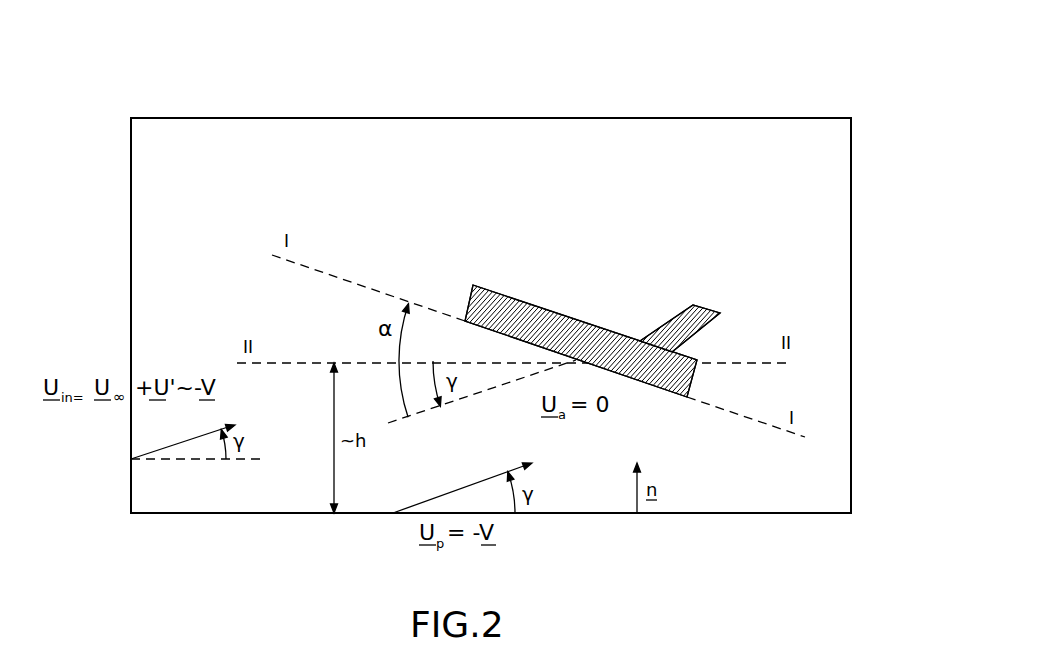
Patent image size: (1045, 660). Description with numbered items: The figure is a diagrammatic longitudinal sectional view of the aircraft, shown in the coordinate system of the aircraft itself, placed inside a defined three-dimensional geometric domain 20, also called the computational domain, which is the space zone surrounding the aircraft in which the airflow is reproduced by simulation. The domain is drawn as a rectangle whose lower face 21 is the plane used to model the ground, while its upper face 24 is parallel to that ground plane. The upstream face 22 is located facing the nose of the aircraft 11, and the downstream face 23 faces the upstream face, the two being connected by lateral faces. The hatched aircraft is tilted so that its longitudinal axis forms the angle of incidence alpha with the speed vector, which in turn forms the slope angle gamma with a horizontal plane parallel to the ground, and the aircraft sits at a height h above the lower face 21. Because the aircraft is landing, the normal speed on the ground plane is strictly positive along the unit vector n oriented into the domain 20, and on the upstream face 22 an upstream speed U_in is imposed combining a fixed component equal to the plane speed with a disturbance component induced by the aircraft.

The three-dimensional geometric domain 20 is at (648, 80).
The lower face 21 is at (695, 513).
The upstream face 22 is at (131, 249).
The downstream face 23 is at (851, 188).
The upper face 24 is at (277, 118).
The nose of the aircraft 11 is at (613, 292).